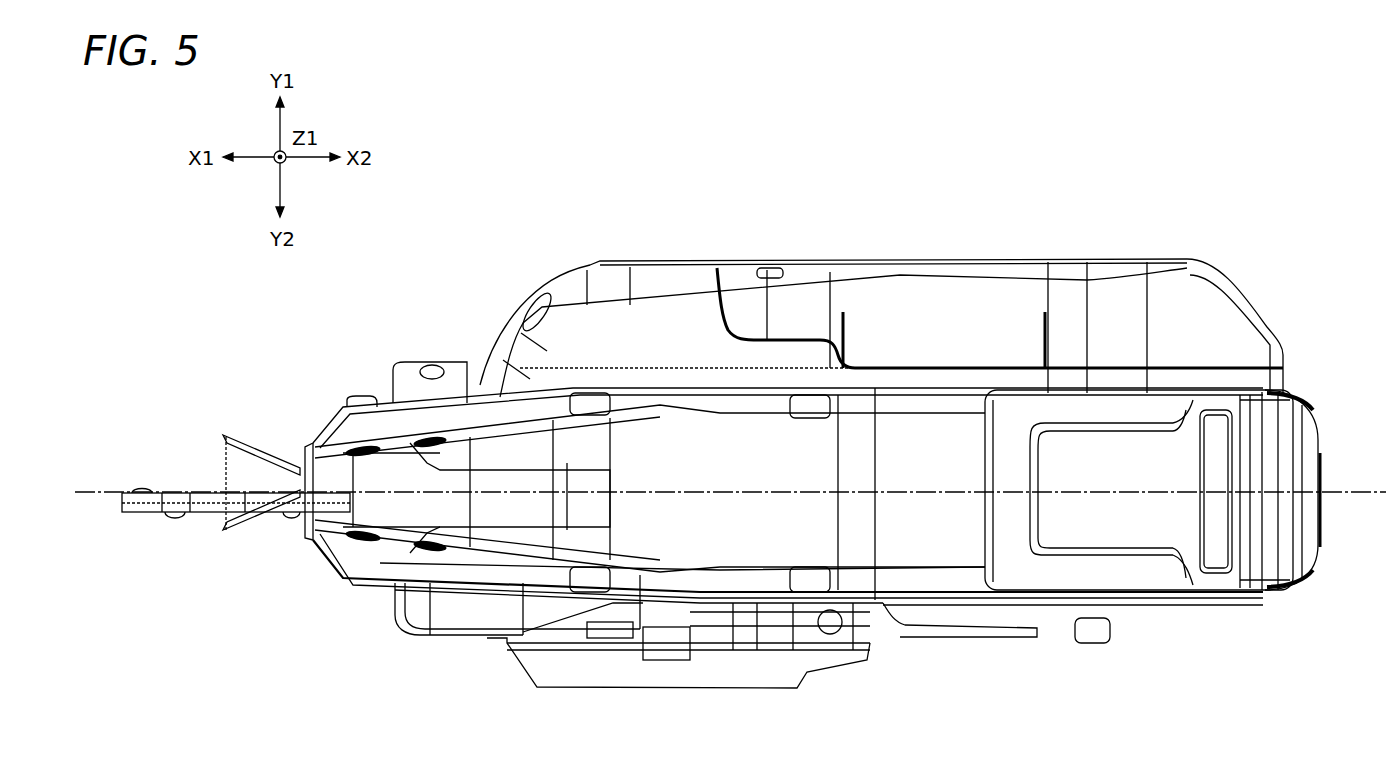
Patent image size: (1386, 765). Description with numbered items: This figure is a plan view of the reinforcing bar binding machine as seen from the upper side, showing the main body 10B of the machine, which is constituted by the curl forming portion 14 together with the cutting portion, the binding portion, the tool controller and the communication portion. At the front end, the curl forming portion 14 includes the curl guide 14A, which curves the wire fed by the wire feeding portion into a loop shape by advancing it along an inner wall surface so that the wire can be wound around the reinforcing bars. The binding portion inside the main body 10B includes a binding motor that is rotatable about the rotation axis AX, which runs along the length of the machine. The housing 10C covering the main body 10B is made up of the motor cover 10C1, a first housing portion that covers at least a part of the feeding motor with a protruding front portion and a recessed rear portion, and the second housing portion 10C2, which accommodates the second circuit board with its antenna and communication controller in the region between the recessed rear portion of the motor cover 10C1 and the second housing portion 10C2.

The curl forming portion 14 is at (205, 495).
The curl guide 14A is at (261, 482).
The main body 10B is at (645, 527).
The housing 10C is at (881, 267).
The motor cover 10C1 is at (657, 288).
The second housing portion 10C2 is at (863, 298).
The rotation axis AX is at (1343, 492).